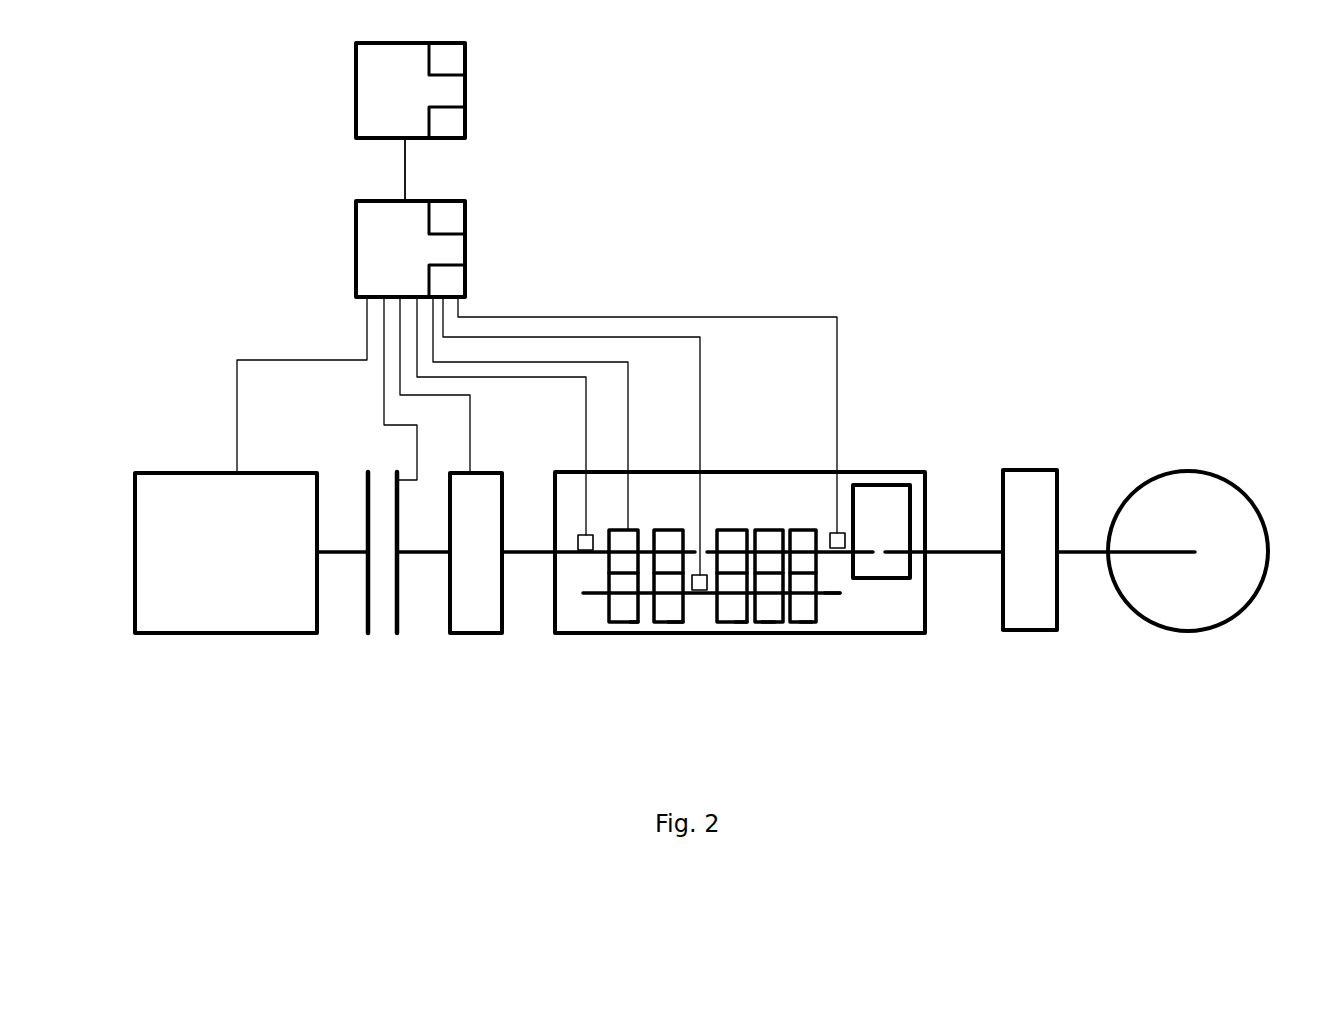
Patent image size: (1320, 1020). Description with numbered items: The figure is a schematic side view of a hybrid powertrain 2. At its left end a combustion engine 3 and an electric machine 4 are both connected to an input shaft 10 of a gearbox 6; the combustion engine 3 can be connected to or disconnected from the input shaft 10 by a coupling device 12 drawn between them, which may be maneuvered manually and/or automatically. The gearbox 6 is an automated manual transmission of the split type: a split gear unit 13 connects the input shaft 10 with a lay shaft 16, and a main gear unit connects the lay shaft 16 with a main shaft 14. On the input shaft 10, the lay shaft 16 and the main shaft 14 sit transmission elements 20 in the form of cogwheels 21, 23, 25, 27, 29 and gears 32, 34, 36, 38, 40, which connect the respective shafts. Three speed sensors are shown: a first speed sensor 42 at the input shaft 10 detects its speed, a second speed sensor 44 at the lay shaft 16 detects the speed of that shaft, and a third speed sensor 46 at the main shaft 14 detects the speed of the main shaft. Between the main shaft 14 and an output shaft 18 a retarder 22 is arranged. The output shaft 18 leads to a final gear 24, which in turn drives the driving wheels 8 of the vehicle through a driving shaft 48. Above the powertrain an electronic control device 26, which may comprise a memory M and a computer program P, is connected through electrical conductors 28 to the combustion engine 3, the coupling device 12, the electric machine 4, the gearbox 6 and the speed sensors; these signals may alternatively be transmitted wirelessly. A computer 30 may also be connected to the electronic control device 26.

The hybrid powertrain 2 is at (722, 296).
The combustion engine 3 is at (257, 634).
The electric machine 4 is at (477, 634).
The gearbox 6 is at (610, 623).
The driving wheels 8 is at (1193, 631).
The input shaft 10 is at (560, 585).
The coupling device 12 is at (399, 605).
The split gear unit 13 is at (627, 710).
The main shaft 14 is at (863, 556).
The lay shaft 16 is at (592, 597).
The output shaft 18 is at (953, 545).
The transmission elements 20 is at (830, 598).
The cogwheel 21 is at (622, 530).
The retarder 22 is at (890, 485).
The cogwheel 23 is at (672, 530).
The final gear 24 is at (1030, 631).
The cogwheel 25 is at (735, 530).
The electronic control device 26 is at (356, 231).
The cogwheel 27 is at (773, 530).
The electrical conductors 28 is at (262, 358).
The cogwheel 29 is at (808, 530).
The computer 30 is at (356, 100).
The gear 32 is at (636, 623).
The gear 34 is at (675, 623).
The gear 36 is at (742, 623).
The gear 38 is at (770, 623).
The gear 40 is at (808, 623).
The first speed sensor 42 is at (578, 537).
The second speed sensor 44 is at (701, 596).
The third speed sensor 46 is at (839, 552).
The driving shaft 48 is at (1073, 545).